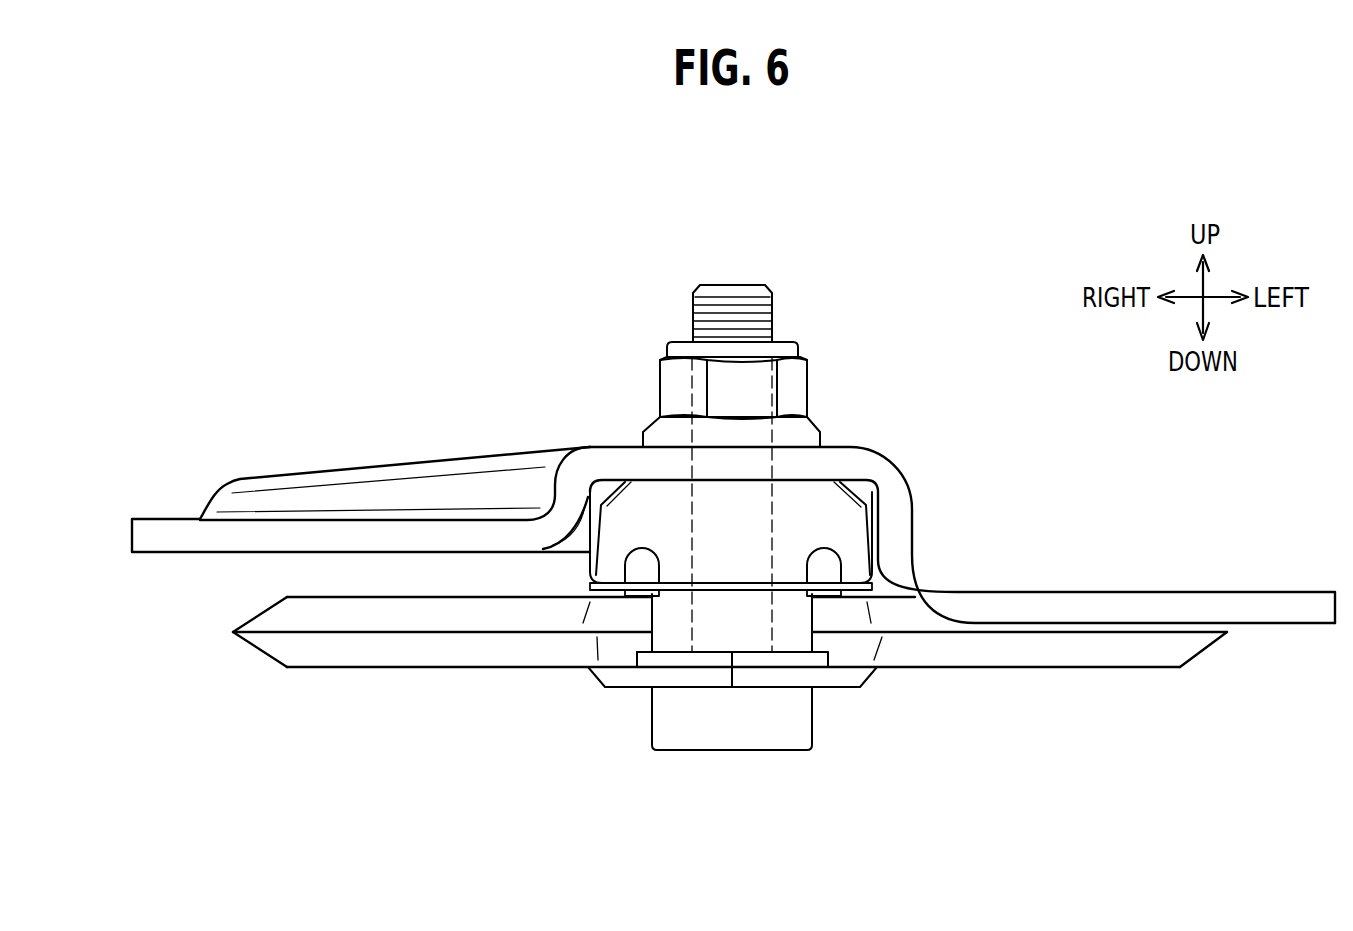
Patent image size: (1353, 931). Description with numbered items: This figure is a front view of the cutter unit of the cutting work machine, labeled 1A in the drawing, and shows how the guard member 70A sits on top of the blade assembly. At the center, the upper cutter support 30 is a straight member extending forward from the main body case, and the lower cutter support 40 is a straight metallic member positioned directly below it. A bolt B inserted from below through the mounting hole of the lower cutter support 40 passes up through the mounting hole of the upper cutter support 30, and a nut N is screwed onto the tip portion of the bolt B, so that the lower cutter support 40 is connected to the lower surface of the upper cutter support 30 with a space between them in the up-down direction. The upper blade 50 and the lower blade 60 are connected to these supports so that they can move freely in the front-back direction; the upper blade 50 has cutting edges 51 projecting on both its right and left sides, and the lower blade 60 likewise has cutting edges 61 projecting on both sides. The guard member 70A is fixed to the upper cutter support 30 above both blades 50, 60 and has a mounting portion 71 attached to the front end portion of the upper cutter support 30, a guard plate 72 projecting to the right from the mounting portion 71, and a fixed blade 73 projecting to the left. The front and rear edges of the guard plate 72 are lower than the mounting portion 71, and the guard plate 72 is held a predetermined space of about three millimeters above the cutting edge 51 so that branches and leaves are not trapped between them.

The fastening structure 1A is at (503, 292).
The bolt B is at (762, 318).
The nut N is at (793, 386).
The upper cutter support 30 is at (829, 513).
The guard member 70A is at (913, 460).
The mounting portion 71 is at (627, 464).
The guard plate 72 is at (378, 470).
The upper blade 50 is at (461, 578).
The cutting edges 51 is at (338, 615).
The fixed blade 73 is at (1122, 604).
The lower blade 60 is at (460, 684).
The cutting edges 61 is at (338, 650).
The lower cutter support 40 is at (847, 676).